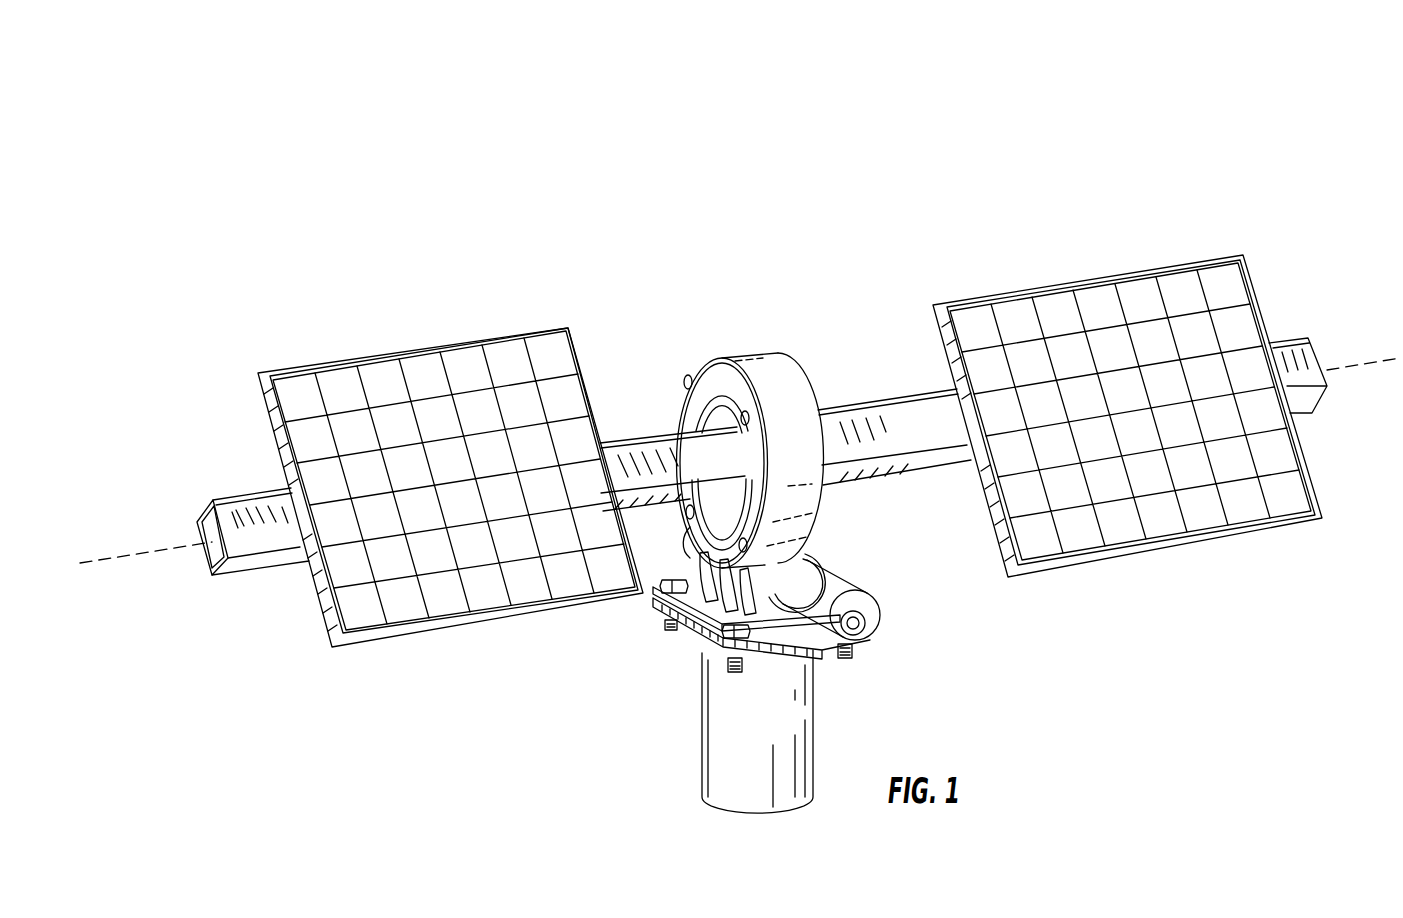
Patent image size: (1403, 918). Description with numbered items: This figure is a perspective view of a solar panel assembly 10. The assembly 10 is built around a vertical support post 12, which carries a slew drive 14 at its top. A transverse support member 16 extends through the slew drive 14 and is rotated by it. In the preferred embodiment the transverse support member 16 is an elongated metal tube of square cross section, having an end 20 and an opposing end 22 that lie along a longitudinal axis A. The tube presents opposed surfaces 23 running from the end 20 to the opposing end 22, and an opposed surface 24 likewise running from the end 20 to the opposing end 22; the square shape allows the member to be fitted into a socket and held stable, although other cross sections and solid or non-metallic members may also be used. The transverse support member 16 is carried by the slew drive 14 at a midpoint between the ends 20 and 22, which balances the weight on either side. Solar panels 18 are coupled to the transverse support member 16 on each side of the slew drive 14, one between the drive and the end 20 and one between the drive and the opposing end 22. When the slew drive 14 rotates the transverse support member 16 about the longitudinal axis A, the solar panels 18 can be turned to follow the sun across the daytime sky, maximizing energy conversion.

The solar panel assembly 10 is at (884, 284).
The support post 12 is at (702, 720).
The slew drive 14 is at (759, 340).
The transverse support member 16 is at (648, 450).
The solar panels 18 is at (428, 368).
The end 20 is at (198, 518).
The opposing end 22 is at (1313, 337).
The opposed surfaces 23 is at (255, 497).
The opposed surface 24 is at (197, 565).
The longitudinal axis A is at (140, 553).